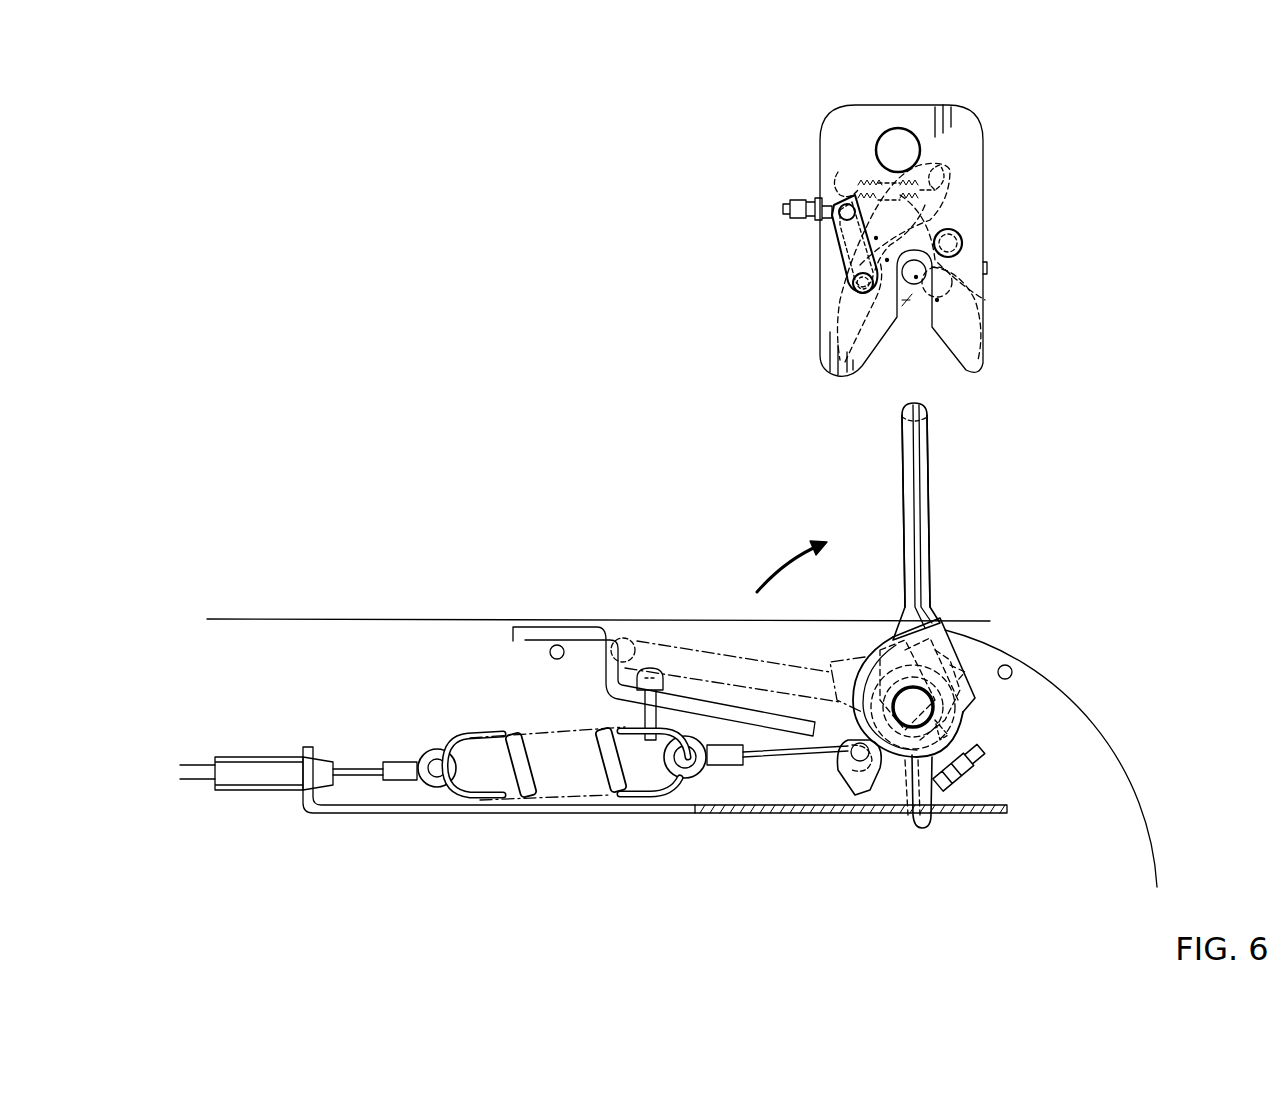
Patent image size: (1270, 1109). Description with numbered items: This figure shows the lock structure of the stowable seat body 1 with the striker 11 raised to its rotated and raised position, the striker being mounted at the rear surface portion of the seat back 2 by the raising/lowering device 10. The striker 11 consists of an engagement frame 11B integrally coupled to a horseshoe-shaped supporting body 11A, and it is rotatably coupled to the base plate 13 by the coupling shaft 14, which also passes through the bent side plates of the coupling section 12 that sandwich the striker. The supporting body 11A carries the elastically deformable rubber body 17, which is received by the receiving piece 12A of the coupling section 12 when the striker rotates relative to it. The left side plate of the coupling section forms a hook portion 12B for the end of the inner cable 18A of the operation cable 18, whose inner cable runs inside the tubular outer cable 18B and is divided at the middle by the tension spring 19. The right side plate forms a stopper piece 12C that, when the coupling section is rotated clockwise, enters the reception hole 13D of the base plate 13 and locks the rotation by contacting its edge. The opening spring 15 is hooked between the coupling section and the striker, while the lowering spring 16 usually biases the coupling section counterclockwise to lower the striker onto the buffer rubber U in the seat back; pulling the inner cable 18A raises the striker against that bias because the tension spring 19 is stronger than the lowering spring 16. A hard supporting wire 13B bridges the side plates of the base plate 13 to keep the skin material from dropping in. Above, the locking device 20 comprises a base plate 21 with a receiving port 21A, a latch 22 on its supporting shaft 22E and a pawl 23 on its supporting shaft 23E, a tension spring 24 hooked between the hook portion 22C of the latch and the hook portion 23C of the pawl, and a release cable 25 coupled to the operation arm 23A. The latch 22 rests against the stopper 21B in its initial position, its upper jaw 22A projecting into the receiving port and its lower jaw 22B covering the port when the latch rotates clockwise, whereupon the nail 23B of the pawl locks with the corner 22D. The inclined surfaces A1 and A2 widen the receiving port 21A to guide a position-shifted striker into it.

The seat body 1 is at (465, 398).
The seat back 2 is at (282, 627).
The raising/lowering device 10 is at (645, 494).
The striker 11 is at (918, 505).
The supporting body 11A is at (913, 535).
The engagement frame 11B is at (925, 635).
The coupling section 12 is at (862, 680).
The receiving piece 12A is at (905, 805).
The hook portion 12B is at (850, 782).
The stopper piece 12C is at (922, 822).
The base plate 13 is at (573, 812).
The supporting wire 13B is at (556, 645).
The reception hole 13D is at (960, 814).
The coupling shaft 14 is at (912, 700).
The opening spring 15 is at (965, 672).
The lowering spring 16 is at (942, 727).
The rubber body 17 is at (960, 775).
The operation cable 18 is at (262, 760).
The inner cable 18A is at (357, 768).
The outer cable 18B is at (200, 765).
The tension spring 19 is at (545, 752).
The buffer rubber U is at (650, 683).
The locking device 20 is at (812, 356).
The base plate 21 is at (830, 333).
The receiving port 21A is at (907, 340).
The stopper 21B is at (988, 268).
The latch 22 is at (947, 222).
The upper jaw 22A is at (916, 290).
The lower jaw 22B is at (940, 310).
The hook portion 22C is at (940, 175).
The corner 22D is at (845, 362).
The supporting shaft 22E is at (965, 244).
The pawl 23 is at (835, 237).
The operation arm 23A is at (855, 250).
The nail 23B is at (925, 205).
The hook portion 23C is at (838, 172).
The supporting shaft 23E is at (845, 288).
The tension spring 24 is at (882, 186).
The release cable 25 is at (830, 230).
The inclined surface A1 is at (868, 385).
The inclined surface A2 is at (945, 372).